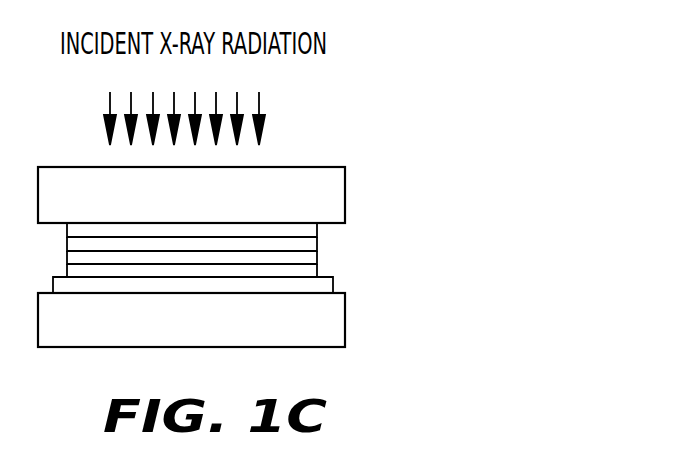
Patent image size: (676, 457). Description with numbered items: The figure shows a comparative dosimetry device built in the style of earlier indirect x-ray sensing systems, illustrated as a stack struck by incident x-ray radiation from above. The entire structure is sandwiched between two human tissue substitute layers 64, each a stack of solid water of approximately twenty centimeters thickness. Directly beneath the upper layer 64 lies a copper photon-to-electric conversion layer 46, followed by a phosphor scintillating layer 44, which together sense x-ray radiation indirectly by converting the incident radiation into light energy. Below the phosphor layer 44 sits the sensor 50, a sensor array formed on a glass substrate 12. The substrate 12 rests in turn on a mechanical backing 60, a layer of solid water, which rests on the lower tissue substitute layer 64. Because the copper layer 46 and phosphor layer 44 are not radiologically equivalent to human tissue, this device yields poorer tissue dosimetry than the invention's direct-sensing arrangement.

The human tissue substitute layer 64 is at (347, 193).
The copper photon-to-electric conversion layer 46 is at (317, 231).
The phosphor scintillating layer 44 is at (317, 244).
The sensor 50 is at (317, 260).
The substrate 12 is at (317, 274).
The mechanical backing 60 is at (333, 287).